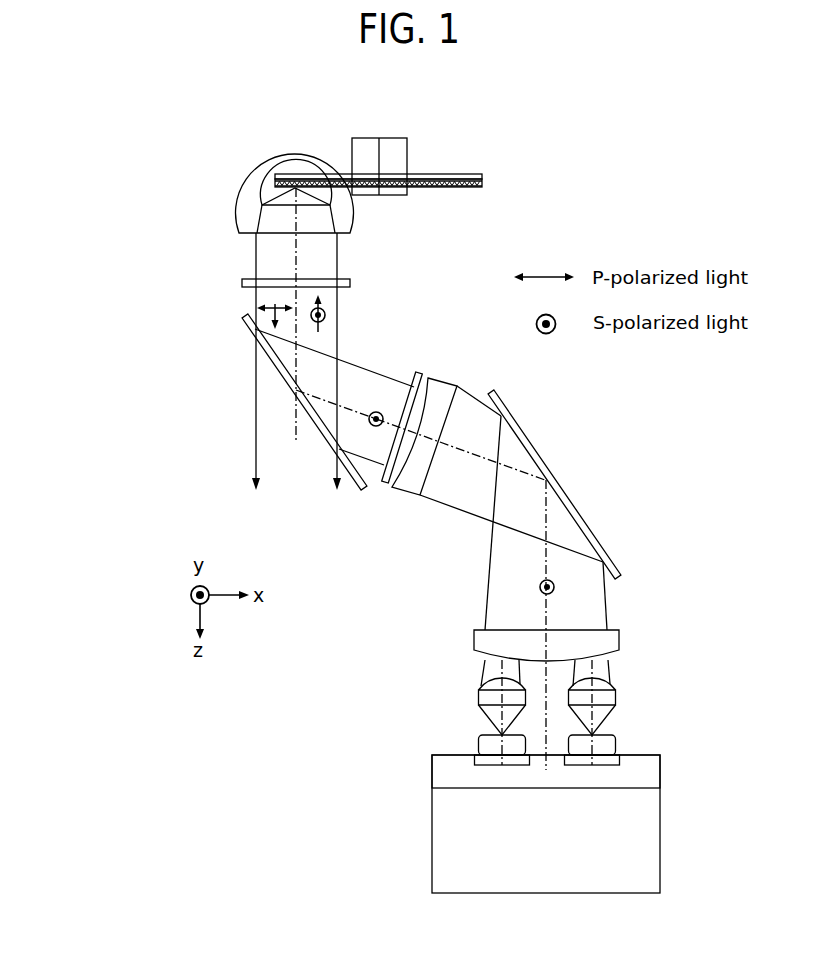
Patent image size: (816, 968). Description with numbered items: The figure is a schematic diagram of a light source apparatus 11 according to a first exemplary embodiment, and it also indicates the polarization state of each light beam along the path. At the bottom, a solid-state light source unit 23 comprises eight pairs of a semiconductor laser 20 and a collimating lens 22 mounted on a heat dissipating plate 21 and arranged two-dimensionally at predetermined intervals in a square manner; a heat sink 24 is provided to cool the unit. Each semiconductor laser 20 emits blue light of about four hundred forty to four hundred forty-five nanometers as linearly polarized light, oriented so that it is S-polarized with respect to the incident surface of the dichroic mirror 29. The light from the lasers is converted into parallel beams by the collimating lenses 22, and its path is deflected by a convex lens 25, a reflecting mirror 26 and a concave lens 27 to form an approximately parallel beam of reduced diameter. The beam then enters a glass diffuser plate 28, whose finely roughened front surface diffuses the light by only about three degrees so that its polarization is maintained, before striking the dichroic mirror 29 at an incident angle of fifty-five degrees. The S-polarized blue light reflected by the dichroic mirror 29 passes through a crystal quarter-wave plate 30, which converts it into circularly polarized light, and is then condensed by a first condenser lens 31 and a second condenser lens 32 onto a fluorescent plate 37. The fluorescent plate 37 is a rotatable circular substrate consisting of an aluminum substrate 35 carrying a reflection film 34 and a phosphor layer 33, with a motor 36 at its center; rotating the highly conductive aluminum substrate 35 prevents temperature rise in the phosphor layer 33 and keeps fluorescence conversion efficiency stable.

The light source apparatus 11 is at (148, 164).
The semiconductor laser 20 is at (613, 741).
The heat dissipating plate 21 is at (643, 772).
The collimating lens 22 is at (609, 696).
The solid-state light source unit 23 is at (720, 667).
The heat sink 24 is at (662, 868).
The convex lens 25 is at (620, 637).
The reflecting mirror 26 is at (608, 551).
The concave lens 27 is at (418, 495).
The diffuser plate 28 is at (383, 484).
The dichroic mirror 29 is at (245, 327).
The quarter-wave plate 30 is at (240, 282).
The first condenser lens 31 is at (240, 231).
The second condenser lens 32 is at (273, 203).
The phosphor layer 33 is at (453, 188).
The reflection film 34 is at (483, 182).
The aluminum substrate 35 is at (460, 173).
The motor 36 is at (407, 138).
The fluorescent plate 37 is at (555, 105).